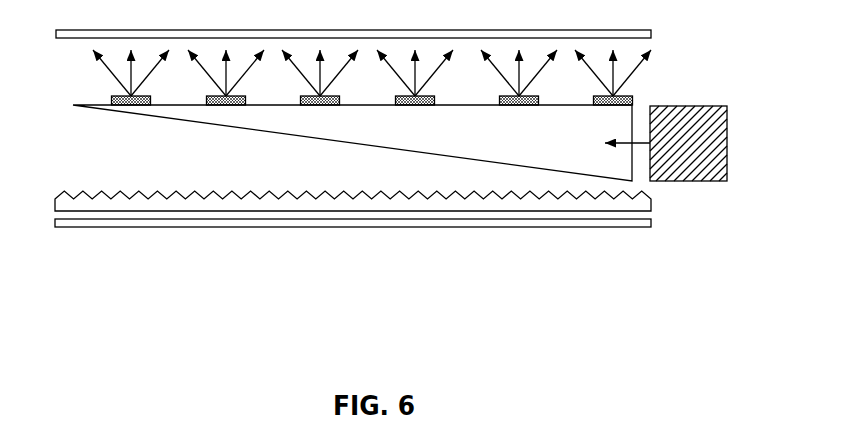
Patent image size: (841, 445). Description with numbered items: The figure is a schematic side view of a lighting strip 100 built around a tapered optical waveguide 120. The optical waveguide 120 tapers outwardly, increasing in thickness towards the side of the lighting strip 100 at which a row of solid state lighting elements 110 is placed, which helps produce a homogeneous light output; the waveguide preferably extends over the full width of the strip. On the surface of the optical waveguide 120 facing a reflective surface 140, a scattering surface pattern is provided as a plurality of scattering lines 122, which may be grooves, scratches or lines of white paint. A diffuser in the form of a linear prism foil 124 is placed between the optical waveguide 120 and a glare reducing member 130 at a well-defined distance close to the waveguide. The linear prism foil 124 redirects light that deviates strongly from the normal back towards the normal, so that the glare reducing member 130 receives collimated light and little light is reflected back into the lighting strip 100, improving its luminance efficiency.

The lighting strip 100 is at (383, 331).
The solid state lighting elements 110 is at (700, 170).
The optical waveguide 120 is at (577, 162).
The scattering lines 122 is at (135, 105).
The linear prism foil 124 is at (142, 200).
The glare reducing member 130 is at (73, 220).
The reflective surface 140 is at (73, 39).